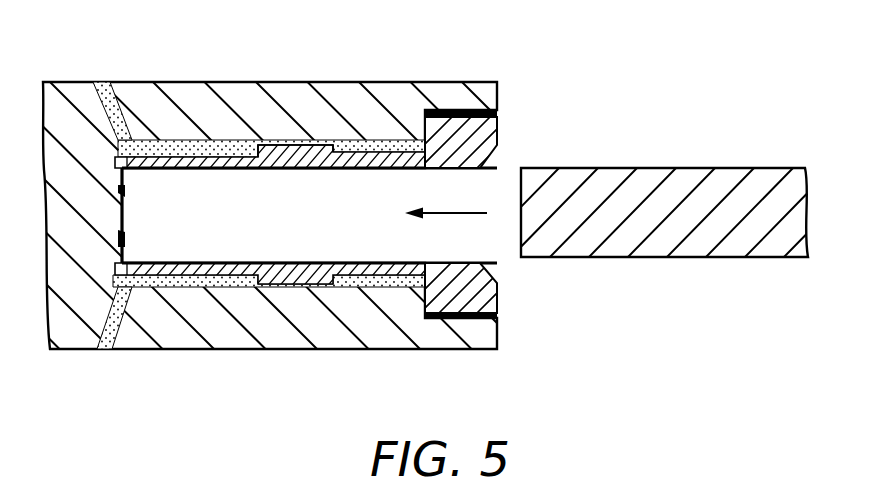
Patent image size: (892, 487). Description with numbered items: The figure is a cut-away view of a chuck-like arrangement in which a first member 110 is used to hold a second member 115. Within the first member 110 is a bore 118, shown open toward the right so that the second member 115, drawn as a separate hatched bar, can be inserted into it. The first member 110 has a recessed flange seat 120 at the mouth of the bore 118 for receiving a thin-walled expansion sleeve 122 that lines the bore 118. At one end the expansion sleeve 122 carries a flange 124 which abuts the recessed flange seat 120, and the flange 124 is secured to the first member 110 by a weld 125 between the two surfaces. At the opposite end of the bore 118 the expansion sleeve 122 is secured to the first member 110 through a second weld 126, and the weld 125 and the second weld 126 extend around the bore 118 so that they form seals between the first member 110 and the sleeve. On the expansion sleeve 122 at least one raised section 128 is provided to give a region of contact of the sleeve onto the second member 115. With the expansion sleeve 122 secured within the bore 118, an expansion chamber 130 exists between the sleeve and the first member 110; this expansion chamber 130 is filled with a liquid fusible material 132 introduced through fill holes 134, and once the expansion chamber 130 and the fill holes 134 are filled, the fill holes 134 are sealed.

The first member 110 is at (238, 92).
The second member 115 is at (717, 168).
The bore 118 is at (487, 187).
The recessed flange seat 120 is at (423, 122).
The thin-walled expansion sleeve 122 is at (283, 170).
The flange 124 is at (490, 128).
The weld 125 is at (452, 320).
The second weld 126 is at (127, 226).
The raised section 128 is at (283, 150).
The expansion chamber 130 is at (365, 148).
The liquid fusible material 132 is at (384, 273).
The fill holes 134 is at (118, 122).